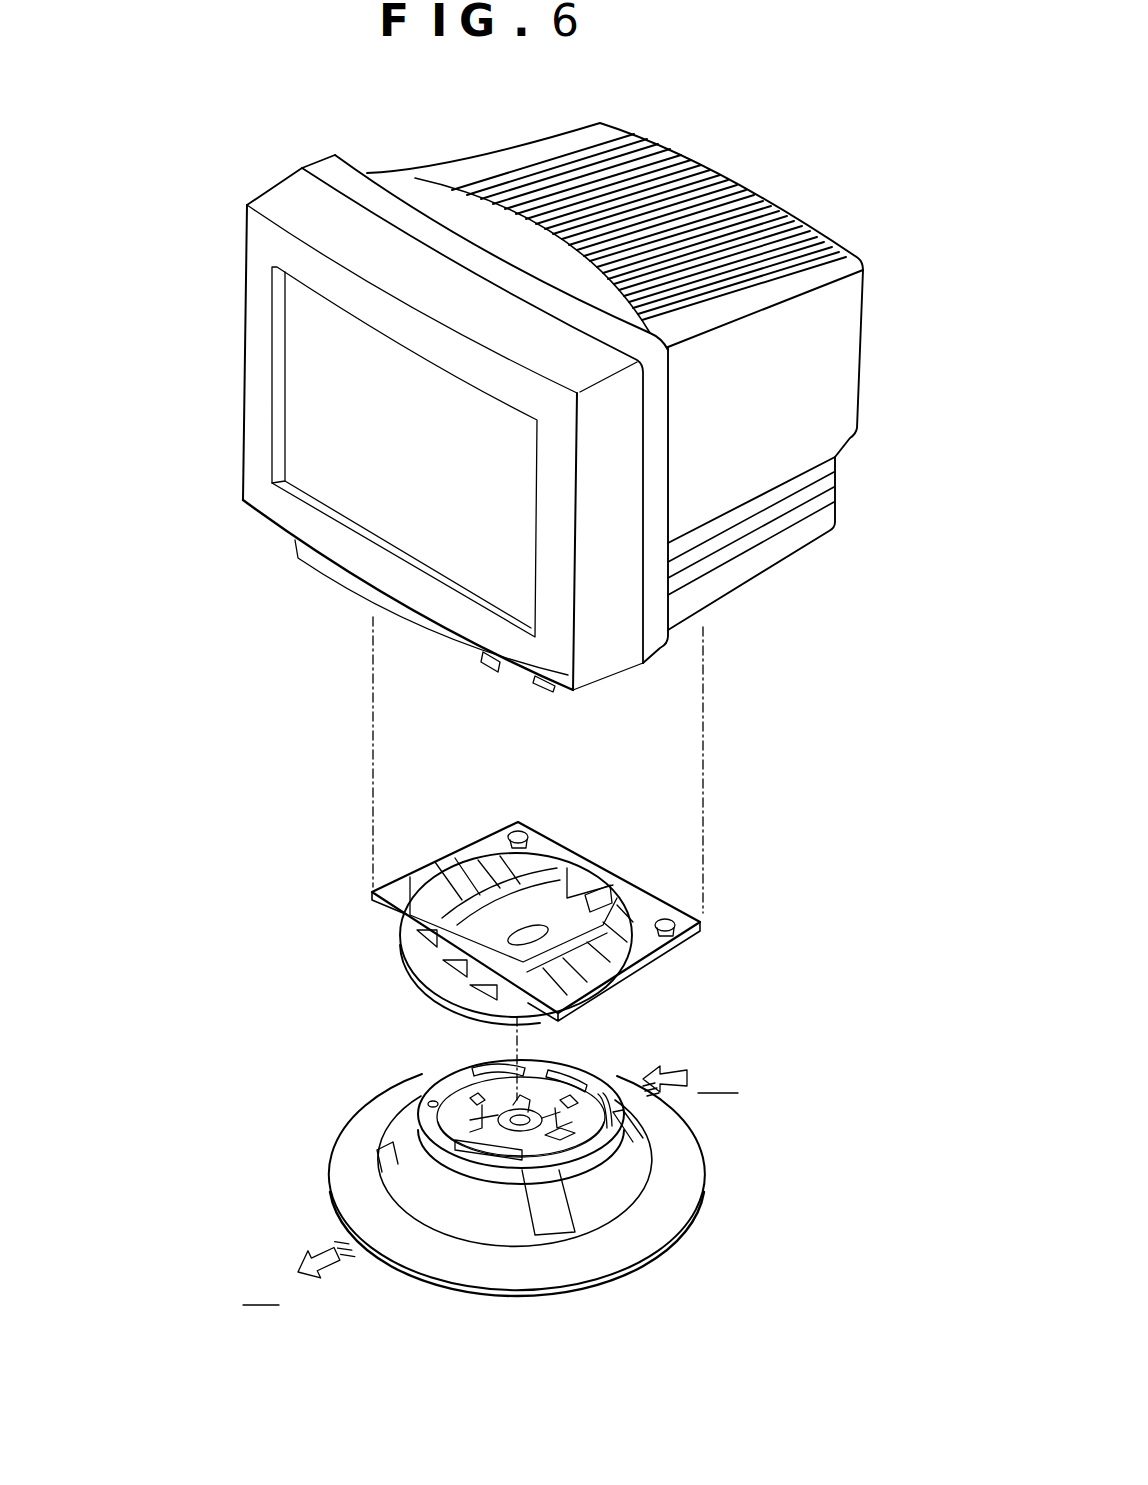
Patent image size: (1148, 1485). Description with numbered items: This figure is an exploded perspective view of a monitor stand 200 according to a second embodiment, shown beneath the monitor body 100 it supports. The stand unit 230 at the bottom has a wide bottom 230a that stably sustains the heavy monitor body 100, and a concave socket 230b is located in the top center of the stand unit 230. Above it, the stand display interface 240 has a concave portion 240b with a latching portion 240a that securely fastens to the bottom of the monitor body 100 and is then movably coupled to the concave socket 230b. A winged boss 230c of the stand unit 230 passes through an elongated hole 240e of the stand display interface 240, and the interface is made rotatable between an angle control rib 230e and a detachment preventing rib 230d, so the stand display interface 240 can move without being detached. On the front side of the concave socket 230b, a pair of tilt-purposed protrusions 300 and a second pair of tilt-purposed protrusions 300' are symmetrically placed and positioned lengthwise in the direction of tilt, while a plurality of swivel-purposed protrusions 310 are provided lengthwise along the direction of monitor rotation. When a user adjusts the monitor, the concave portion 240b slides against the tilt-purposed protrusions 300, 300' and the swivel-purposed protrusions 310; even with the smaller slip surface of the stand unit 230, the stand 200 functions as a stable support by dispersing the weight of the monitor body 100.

The monitor body 100 is at (235, 338).
The stand 200 is at (722, 905).
The stand unit 230 is at (316, 1193).
The wide bottom 230a is at (597, 1253).
The concave socket 230b is at (430, 1112).
The winged boss 230c is at (604, 1117).
The detachment preventing rib 230d is at (473, 1070).
The angle control rib 230e is at (600, 1157).
The stand display interface 240 is at (383, 902).
The latching portion 240a is at (488, 842).
The concave portion 240b is at (547, 1030).
The elongated hole 240e is at (541, 932).
The tilt-purposed protrusions 300 is at (384, 1120).
The second pair of tilt-purposed protrusions 300' is at (424, 1189).
The swivel-purposed protrusions 310 is at (475, 1065).